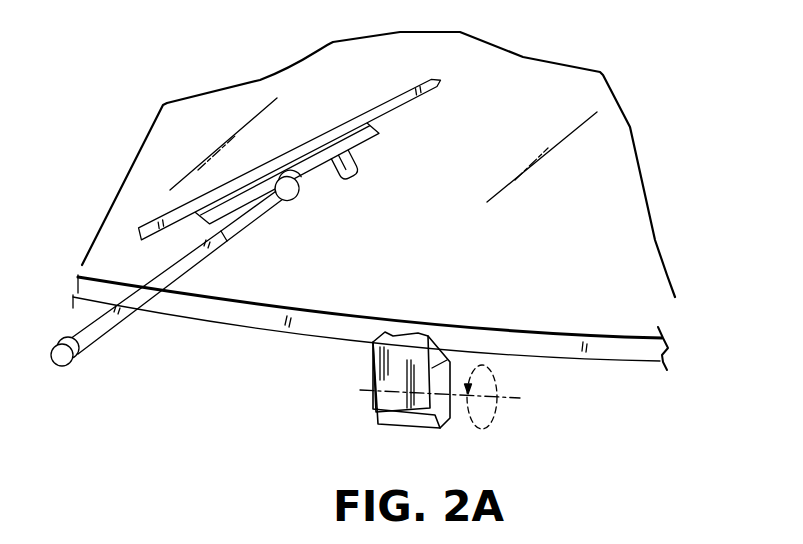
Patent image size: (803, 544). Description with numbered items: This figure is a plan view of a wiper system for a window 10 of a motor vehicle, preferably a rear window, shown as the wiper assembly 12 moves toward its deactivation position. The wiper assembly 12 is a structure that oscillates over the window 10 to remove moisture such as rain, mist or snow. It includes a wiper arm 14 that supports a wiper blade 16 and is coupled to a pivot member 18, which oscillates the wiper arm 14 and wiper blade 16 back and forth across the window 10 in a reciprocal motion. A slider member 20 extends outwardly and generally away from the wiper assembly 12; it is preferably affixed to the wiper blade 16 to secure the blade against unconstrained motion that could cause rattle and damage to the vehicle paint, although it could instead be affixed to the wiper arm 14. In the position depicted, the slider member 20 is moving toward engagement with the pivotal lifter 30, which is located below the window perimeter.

The window 10 is at (512, 118).
The wiper assembly 12 is at (141, 186).
The wiper arm 14 is at (203, 257).
The wiper blade 16 is at (300, 156).
The pivot member 18 is at (61, 366).
The slider member 20 is at (372, 181).
The pivotal lifter 30 is at (464, 433).